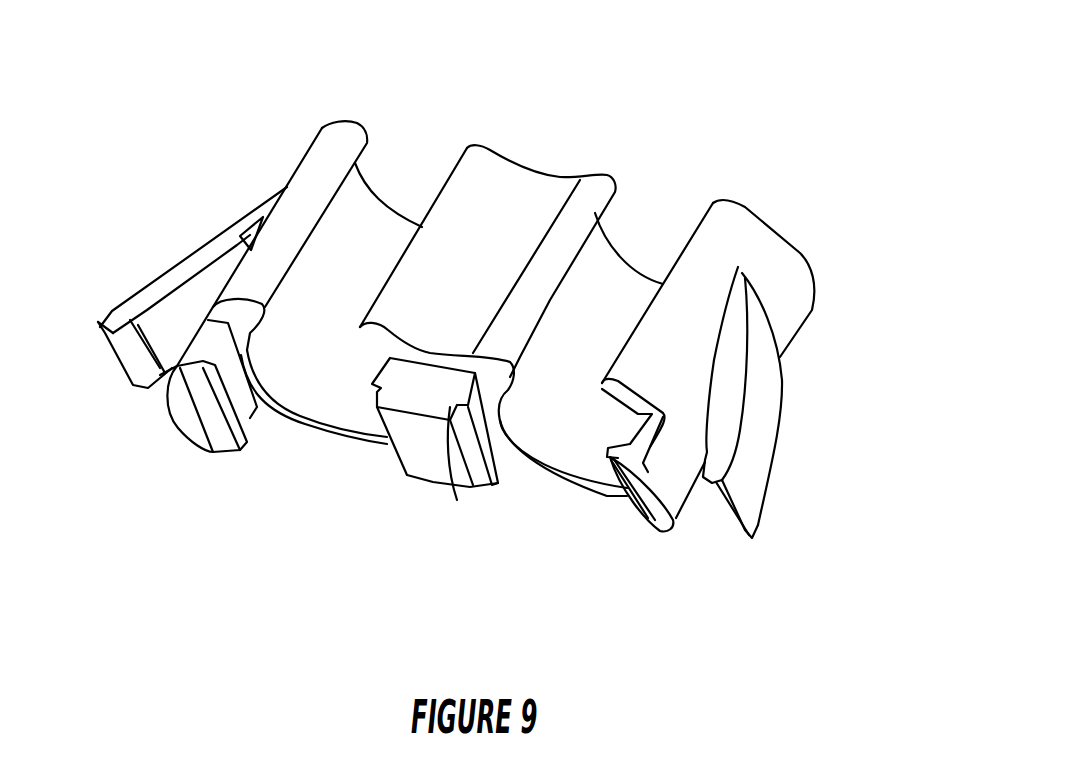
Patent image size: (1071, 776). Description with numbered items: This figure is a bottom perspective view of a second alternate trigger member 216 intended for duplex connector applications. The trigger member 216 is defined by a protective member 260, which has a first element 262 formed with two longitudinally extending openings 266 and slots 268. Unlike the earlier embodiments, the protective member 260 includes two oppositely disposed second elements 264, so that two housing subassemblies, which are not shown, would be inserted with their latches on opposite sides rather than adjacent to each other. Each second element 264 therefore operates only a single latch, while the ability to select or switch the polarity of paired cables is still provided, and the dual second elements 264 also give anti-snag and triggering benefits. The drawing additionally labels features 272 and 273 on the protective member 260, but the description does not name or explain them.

The trigger member 216 is at (828, 154).
The protective member 260 is at (792, 307).
The first element 262 is at (323, 147).
The second element 264 is at (180, 247).
The longitudinally extending opening 266 is at (439, 329).
The slot 268 is at (423, 158).
The tab 272 is at (200, 376).
The barb 273 is at (222, 428).